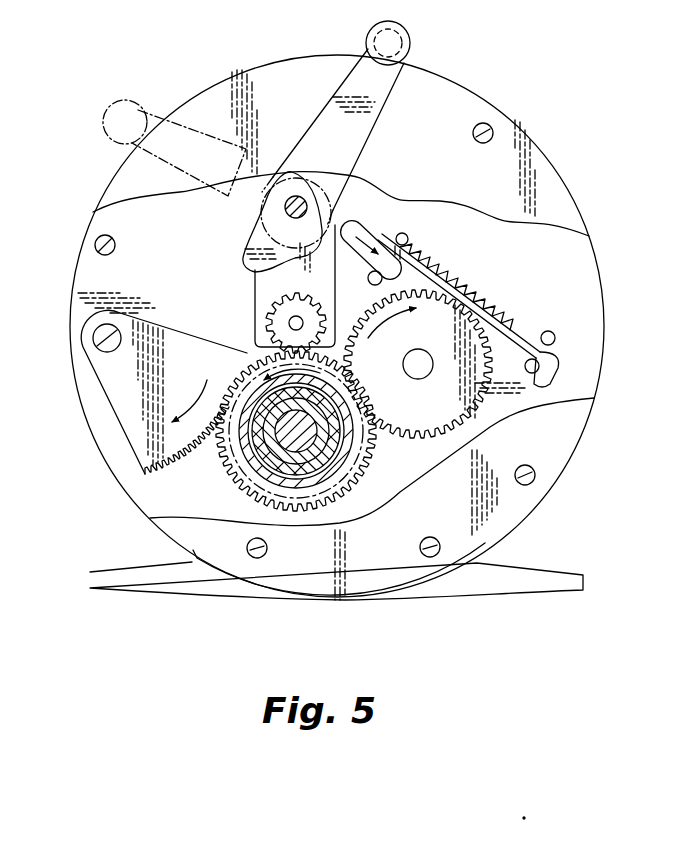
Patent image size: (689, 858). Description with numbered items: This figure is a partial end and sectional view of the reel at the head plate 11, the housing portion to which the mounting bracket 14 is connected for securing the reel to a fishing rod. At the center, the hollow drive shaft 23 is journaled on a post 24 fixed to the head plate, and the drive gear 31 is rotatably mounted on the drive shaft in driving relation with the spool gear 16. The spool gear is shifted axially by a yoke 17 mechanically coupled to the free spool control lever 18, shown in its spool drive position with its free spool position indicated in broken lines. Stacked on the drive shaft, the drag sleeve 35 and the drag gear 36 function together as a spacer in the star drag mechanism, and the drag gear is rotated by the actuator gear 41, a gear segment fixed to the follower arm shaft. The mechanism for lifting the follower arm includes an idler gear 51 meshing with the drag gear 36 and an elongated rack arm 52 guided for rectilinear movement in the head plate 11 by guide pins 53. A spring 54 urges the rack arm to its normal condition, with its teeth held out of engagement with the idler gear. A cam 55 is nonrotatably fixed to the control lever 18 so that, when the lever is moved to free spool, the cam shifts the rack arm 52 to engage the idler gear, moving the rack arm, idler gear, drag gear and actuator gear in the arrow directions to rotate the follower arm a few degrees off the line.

The head plate 11 is at (190, 84).
The mounting bracket 14 is at (547, 587).
The spool gear 16 is at (270, 316).
The yoke 17 is at (262, 281).
The free spool control lever 18 is at (326, 127).
The drive shaft 23 is at (268, 443).
The post 24 is at (308, 437).
The drive gear 31 is at (308, 512).
The drag sleeve 35 is at (317, 467).
The drag gear 36 is at (367, 445).
The actuator gear 41 is at (108, 381).
The idler gear 51 is at (427, 417).
The rack arm 52 is at (530, 343).
The guide pins 53 is at (405, 236).
The spring 54 is at (466, 284).
The cam 55 is at (262, 235).